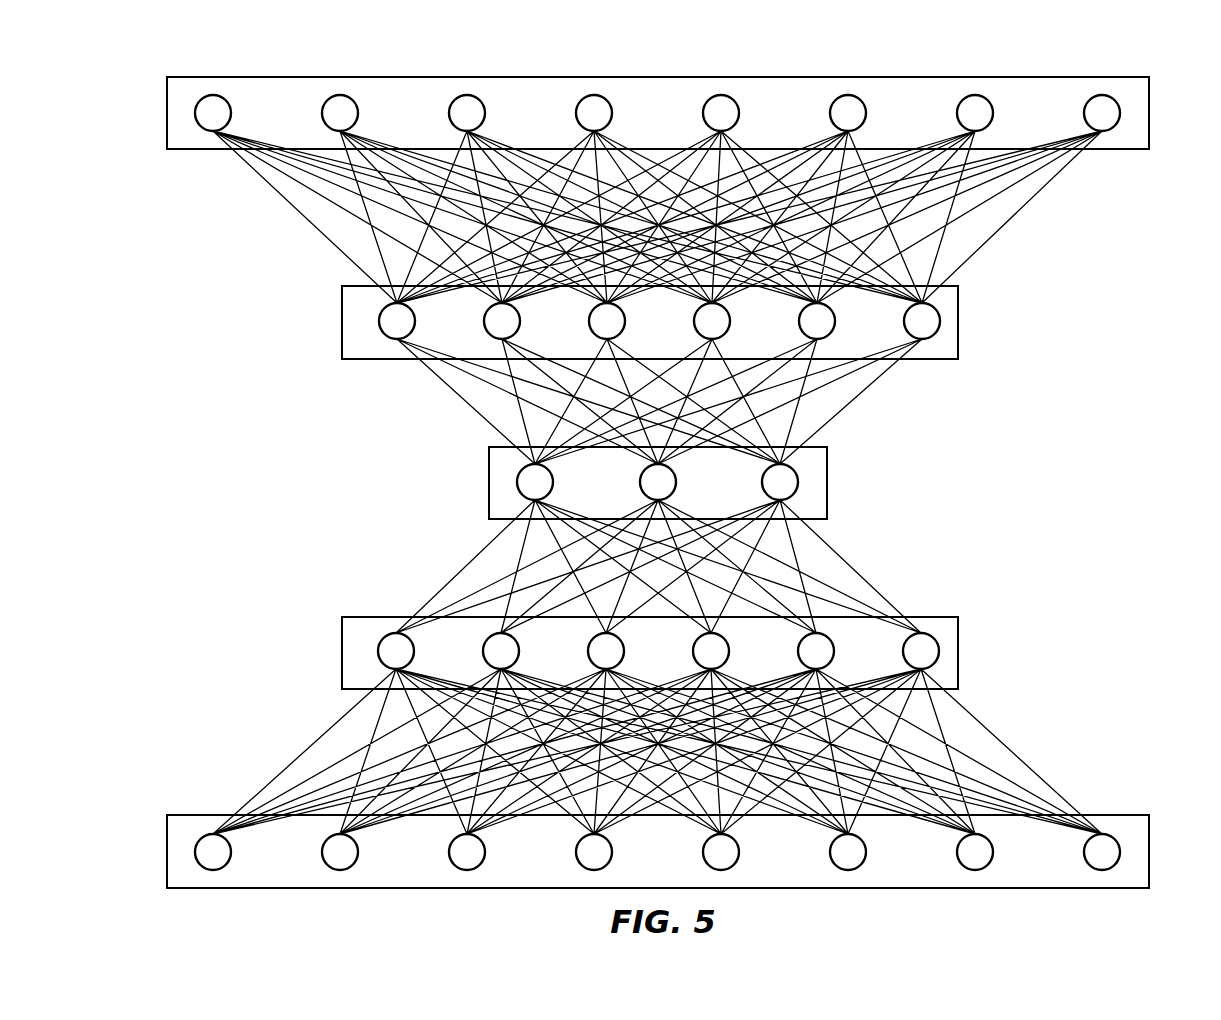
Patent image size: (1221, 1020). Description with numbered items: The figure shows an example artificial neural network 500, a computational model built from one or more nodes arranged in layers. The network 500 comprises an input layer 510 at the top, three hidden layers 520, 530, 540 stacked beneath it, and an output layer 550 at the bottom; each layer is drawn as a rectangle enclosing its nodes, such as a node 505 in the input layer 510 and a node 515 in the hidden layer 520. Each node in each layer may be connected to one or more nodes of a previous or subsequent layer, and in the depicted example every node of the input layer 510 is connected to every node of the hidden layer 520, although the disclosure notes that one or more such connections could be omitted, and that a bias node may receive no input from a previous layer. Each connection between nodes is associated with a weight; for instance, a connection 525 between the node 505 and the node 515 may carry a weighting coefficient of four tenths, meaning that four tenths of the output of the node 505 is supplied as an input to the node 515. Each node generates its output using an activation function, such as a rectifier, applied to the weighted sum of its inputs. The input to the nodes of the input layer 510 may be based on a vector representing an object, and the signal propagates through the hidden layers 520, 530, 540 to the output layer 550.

The artificial neural network 500 is at (655, 451).
The node 505 is at (1120, 113).
The input layer 510 is at (655, 113).
The node 515 is at (940, 321).
The hidden layer 520 is at (660, 322).
The connection 525 is at (1012, 220).
The hidden layer 530 is at (489, 485).
The hidden layer 540 is at (342, 655).
The output layer 550 is at (167, 855).